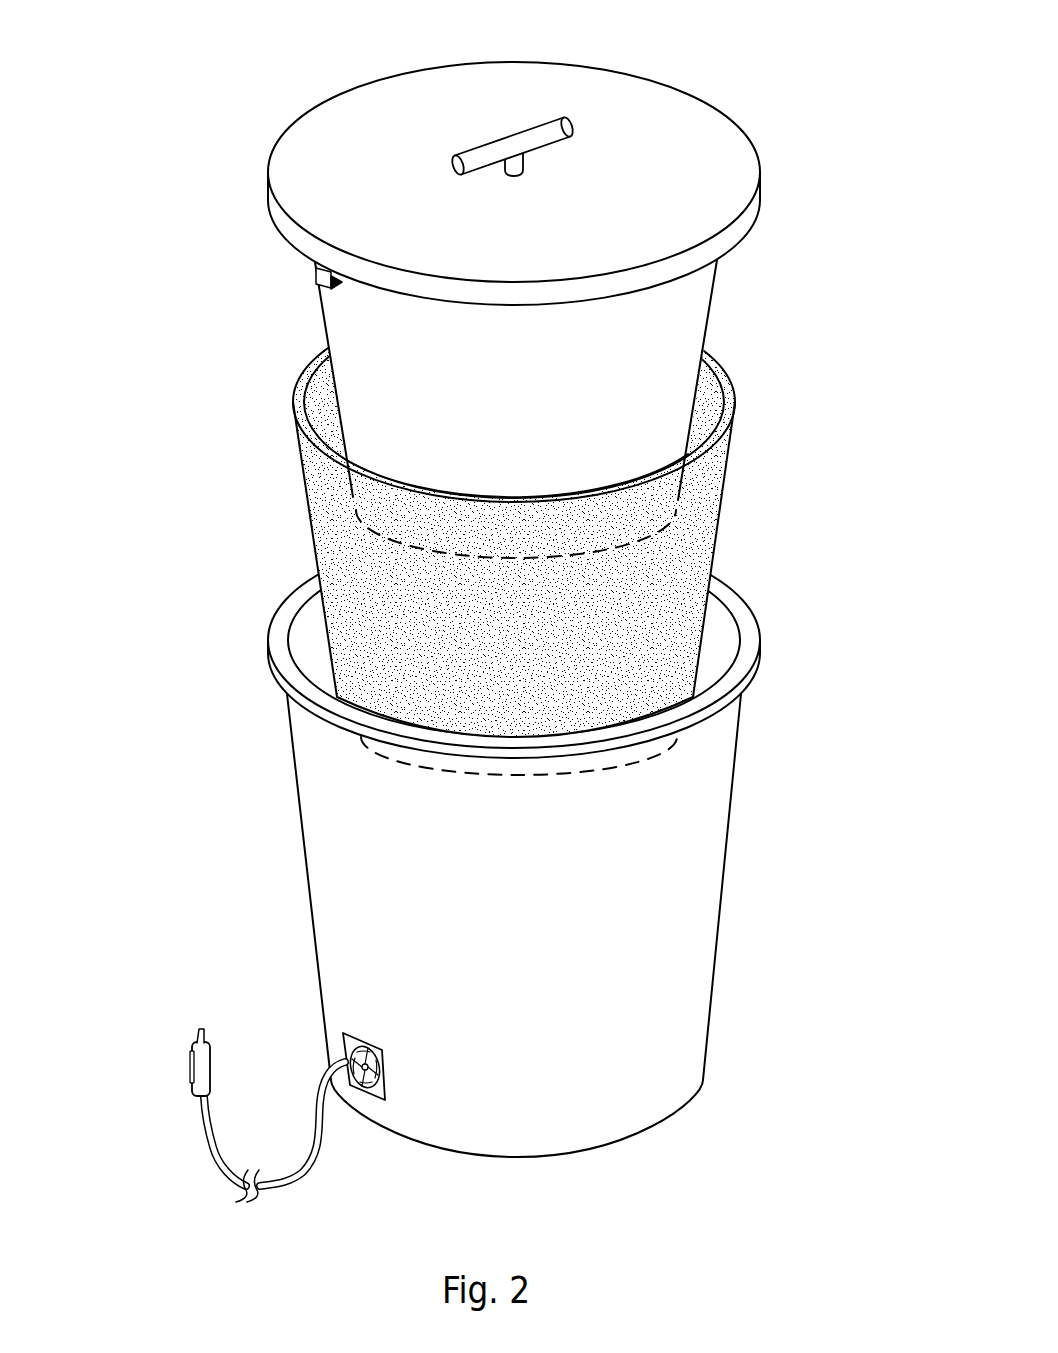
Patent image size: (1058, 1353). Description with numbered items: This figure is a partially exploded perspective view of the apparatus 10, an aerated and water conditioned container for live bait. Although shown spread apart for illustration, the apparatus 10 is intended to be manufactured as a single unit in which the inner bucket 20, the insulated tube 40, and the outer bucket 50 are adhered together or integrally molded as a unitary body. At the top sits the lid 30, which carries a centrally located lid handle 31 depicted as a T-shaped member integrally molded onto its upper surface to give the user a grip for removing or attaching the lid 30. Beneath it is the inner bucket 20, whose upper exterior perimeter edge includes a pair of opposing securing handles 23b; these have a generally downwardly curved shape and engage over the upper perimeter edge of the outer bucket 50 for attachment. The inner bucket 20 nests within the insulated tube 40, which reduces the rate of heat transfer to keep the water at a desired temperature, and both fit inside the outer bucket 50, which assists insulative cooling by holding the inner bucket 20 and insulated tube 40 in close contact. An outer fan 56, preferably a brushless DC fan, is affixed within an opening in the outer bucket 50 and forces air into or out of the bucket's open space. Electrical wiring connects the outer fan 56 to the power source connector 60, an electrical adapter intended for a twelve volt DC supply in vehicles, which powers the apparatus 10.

The apparatus 10 is at (132, 130).
The inner bucket 20 is at (677, 332).
The securing handles 23b is at (323, 277).
The lid 30 is at (638, 97).
The lid handle 31 is at (493, 153).
The insulated tube 40 is at (343, 558).
The outer bucket 50 is at (697, 958).
The outer fan 56 is at (347, 1040).
The power source connector 60 is at (220, 1077).